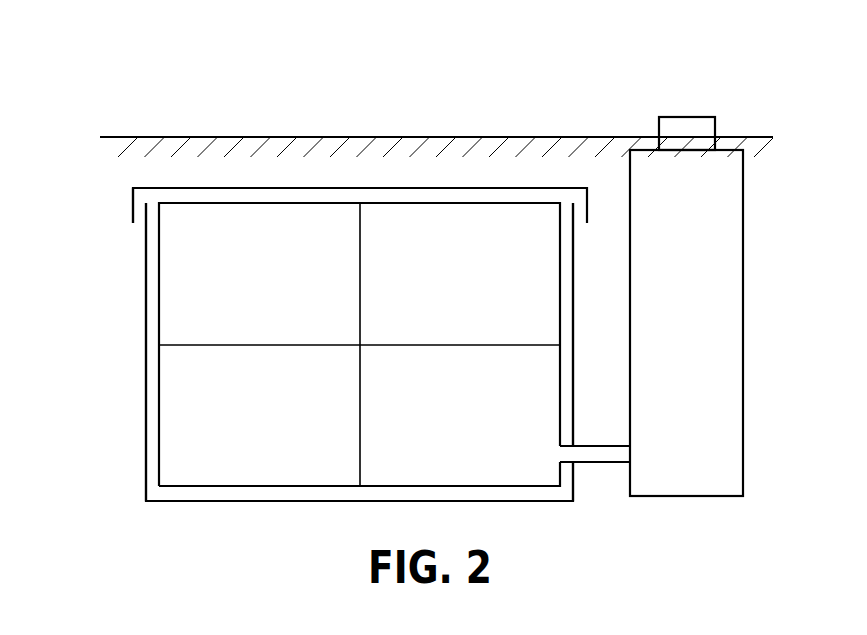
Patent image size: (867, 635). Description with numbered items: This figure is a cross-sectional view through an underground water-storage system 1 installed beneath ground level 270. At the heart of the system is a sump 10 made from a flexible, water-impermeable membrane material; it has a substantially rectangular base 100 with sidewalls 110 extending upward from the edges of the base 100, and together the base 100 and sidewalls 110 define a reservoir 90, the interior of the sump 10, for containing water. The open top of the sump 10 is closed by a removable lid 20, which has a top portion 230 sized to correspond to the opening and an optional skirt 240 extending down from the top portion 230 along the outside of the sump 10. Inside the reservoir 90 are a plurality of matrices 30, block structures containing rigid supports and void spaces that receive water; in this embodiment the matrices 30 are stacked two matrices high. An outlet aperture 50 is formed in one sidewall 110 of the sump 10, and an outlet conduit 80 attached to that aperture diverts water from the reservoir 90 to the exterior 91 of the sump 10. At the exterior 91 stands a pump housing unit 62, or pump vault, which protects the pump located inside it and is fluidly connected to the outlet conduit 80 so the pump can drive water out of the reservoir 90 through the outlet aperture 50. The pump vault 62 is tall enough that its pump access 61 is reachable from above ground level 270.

The underground water-storage system 1 is at (348, 91).
The sump 10 is at (557, 503).
The removable lid 20 is at (488, 188).
The matrices 30 is at (187, 275).
The outlet port/aperture 50 is at (582, 471).
The pump access 61 is at (685, 117).
The pump housing unit 62 is at (743, 330).
The outlet conduit 80 is at (597, 446).
The reservoir 90 is at (413, 266).
The exterior 91 is at (809, 244).
The base 100 is at (185, 502).
The sidewalls 110 is at (146, 400).
The top portion 230 is at (375, 188).
The skirt 240 is at (133, 203).
The ground level 270 is at (198, 133).